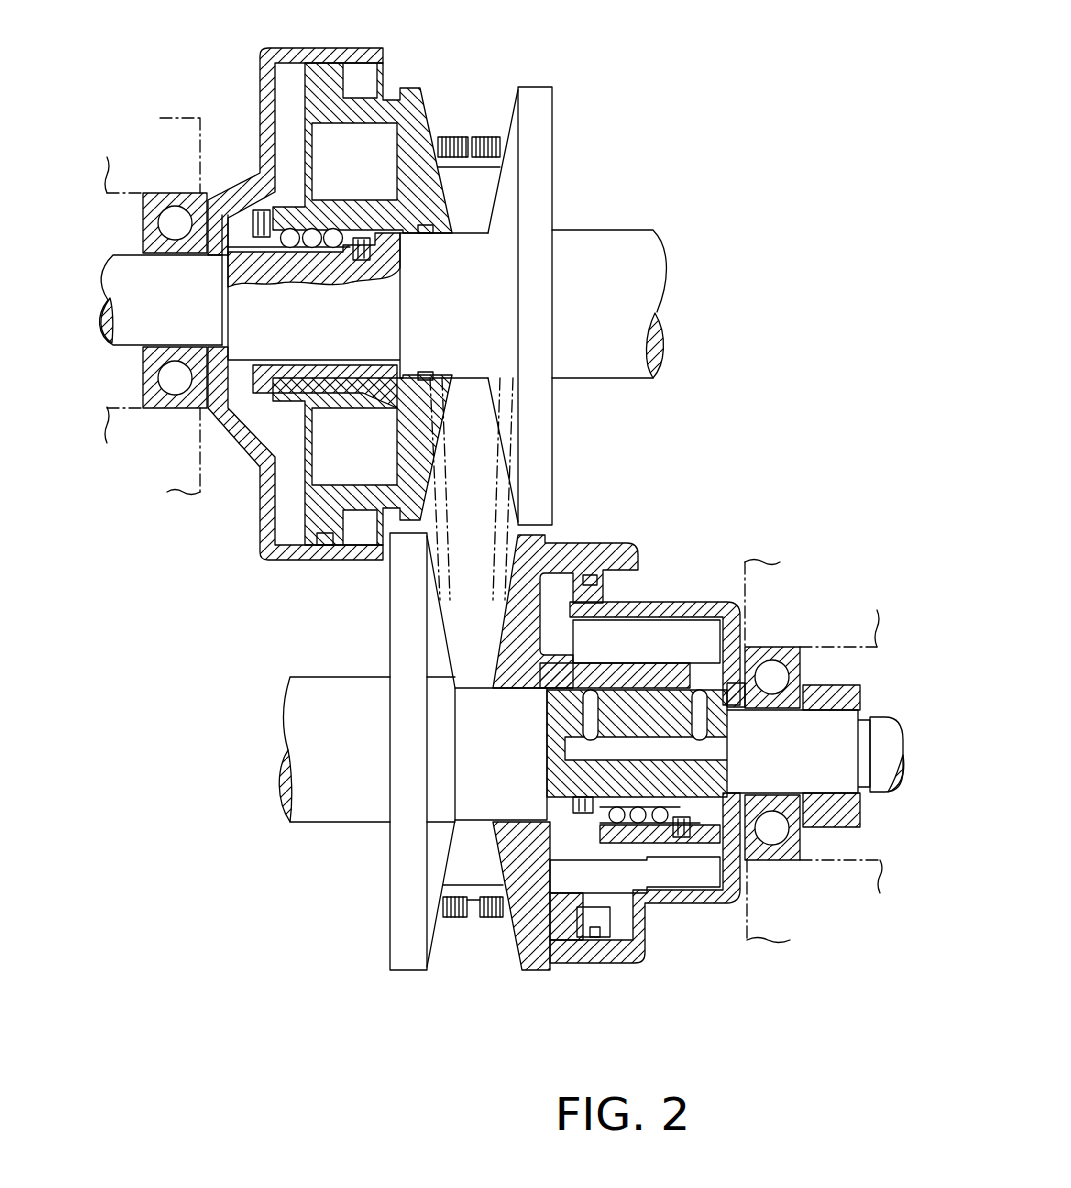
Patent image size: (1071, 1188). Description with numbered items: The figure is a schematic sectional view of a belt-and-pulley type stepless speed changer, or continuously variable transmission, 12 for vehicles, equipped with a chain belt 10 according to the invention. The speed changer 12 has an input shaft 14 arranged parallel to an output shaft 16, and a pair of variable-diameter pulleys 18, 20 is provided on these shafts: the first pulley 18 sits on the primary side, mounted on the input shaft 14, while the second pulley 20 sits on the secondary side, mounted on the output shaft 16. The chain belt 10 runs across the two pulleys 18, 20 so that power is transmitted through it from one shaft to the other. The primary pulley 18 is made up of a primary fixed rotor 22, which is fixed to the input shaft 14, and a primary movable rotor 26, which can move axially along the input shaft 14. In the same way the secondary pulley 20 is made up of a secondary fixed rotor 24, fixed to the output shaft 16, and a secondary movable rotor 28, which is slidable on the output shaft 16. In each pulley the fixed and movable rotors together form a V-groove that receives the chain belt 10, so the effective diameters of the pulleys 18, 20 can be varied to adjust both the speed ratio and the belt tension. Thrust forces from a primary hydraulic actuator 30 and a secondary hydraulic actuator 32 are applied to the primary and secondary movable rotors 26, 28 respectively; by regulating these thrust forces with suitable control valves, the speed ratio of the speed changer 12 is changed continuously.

The chain belt 10 is at (467, 110).
The belt-and-pulley type stepless speed changer 12 is at (691, 149).
The input shaft 14 is at (118, 280).
The output shaft 16 is at (300, 718).
The first pulley 18 is at (560, 87).
The second pulley 20 is at (388, 988).
The primary fixed rotor 22 is at (538, 157).
The secondary fixed rotor 24 is at (405, 918).
The primary movable rotor 26 is at (408, 97).
The secondary movable rotor 28 is at (545, 947).
The primary hydraulic actuator 30 is at (283, 75).
The secondary hydraulic actuator 32 is at (698, 875).